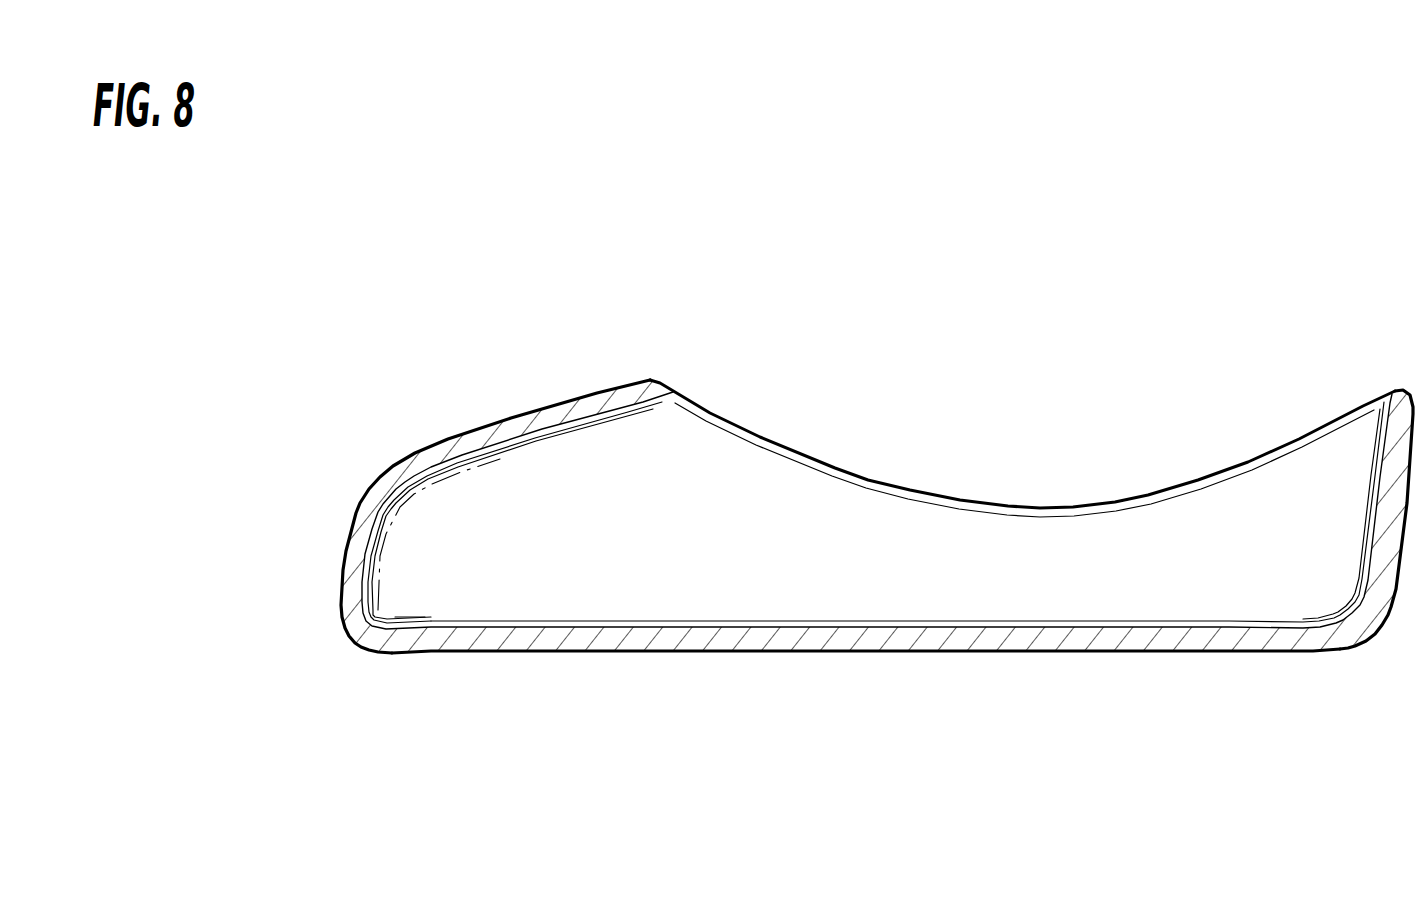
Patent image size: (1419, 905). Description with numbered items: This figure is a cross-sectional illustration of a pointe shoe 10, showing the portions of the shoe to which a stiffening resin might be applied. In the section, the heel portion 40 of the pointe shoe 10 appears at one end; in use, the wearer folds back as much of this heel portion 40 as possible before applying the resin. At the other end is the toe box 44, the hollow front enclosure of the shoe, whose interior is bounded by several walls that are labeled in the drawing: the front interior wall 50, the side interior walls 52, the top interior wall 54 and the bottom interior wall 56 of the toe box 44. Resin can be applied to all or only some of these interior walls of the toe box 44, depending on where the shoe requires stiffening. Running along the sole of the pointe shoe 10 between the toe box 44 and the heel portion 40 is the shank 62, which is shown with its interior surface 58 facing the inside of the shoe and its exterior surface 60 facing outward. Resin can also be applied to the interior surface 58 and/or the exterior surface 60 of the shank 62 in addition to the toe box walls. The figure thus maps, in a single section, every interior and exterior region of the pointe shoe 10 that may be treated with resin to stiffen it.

The pointe shoe 10 is at (1006, 244).
The heel portion 40 is at (1380, 470).
The toe box 44 is at (481, 427).
The front interior wall 50 is at (375, 579).
The side interior walls 52 is at (521, 552).
The top interior wall 54 is at (531, 436).
The bottom interior wall 56 is at (569, 620).
The interior surface of the shank 58 is at (919, 622).
The exterior surface of the shank 60 is at (902, 655).
The shank 62 is at (914, 580).